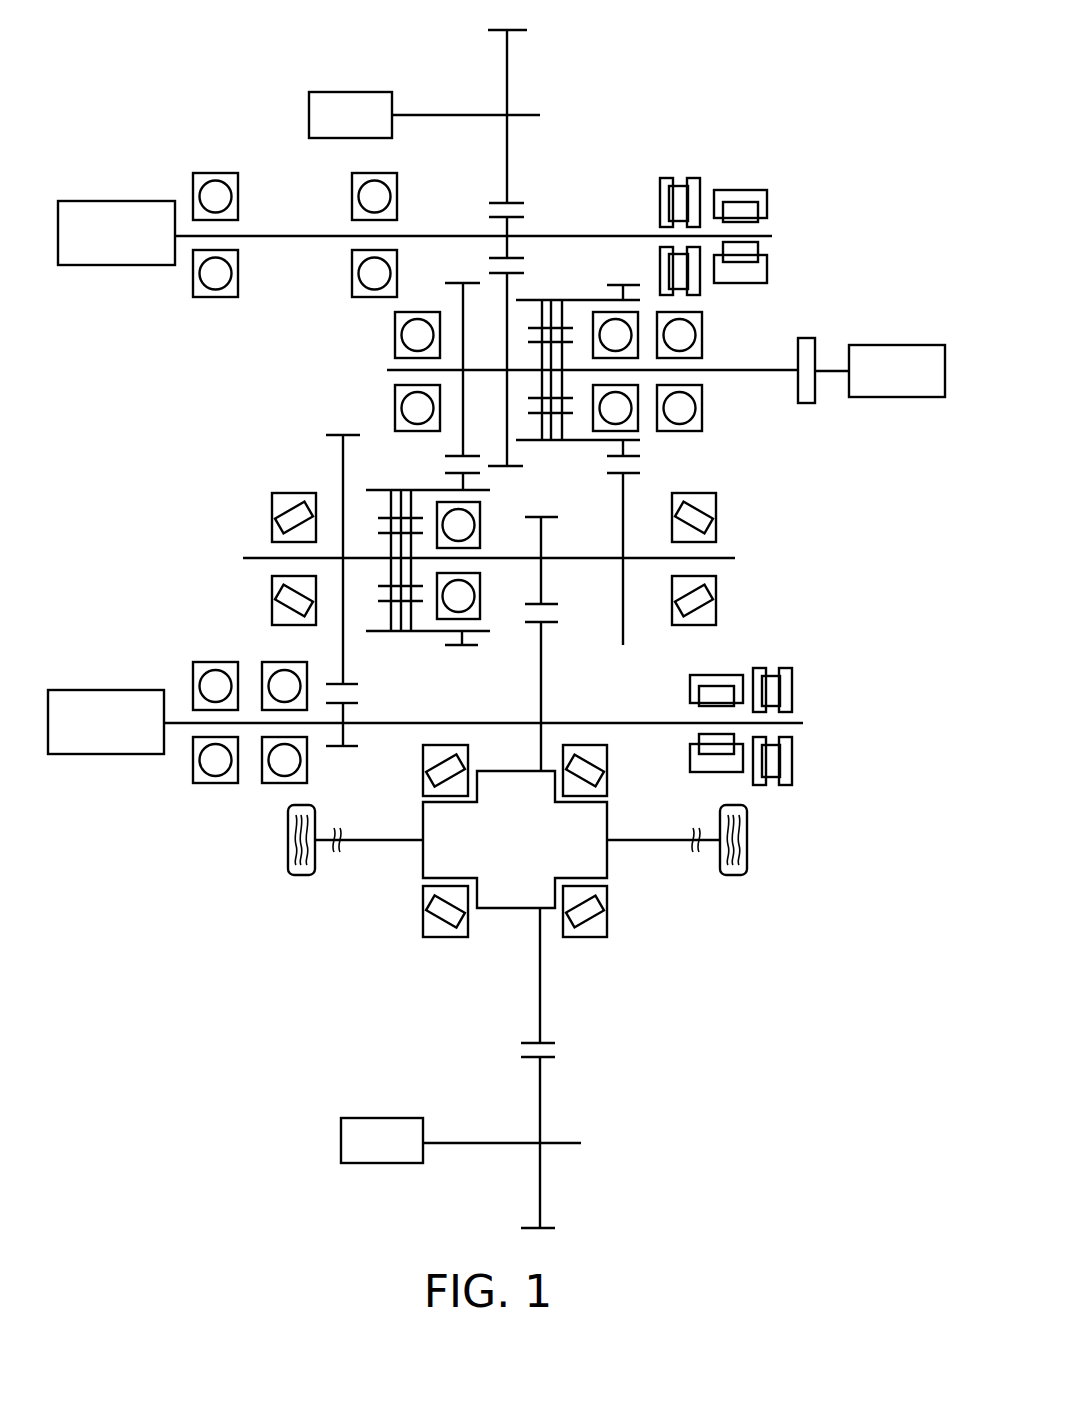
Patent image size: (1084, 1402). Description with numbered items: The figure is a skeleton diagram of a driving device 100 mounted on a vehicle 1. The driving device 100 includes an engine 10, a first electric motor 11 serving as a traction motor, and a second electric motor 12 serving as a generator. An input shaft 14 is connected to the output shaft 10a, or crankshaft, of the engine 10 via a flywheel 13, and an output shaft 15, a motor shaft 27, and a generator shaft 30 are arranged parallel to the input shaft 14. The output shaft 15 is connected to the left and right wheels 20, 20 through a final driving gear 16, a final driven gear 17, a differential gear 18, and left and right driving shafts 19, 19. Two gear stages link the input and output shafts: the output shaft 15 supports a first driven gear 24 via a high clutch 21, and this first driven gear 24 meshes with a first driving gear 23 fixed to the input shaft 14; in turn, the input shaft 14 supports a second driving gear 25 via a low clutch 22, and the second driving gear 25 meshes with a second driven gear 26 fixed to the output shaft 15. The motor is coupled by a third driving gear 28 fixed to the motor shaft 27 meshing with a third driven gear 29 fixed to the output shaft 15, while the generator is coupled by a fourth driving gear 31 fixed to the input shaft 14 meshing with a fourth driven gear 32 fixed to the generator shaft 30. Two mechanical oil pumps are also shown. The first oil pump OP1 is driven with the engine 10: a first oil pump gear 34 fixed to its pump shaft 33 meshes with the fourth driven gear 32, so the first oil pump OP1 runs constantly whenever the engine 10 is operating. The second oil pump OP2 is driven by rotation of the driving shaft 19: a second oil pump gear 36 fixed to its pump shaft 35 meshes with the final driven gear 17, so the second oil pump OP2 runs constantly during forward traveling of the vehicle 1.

The vehicle 1 is at (818, 155).
The driving device 100 is at (622, 118).
The engine 10 is at (886, 345).
The output shaft 10a is at (832, 371).
The first electric motor 11 is at (103, 690).
The second electric motor 12 is at (110, 201).
The flywheel 13 is at (805, 338).
The input shaft 14 is at (745, 371).
The output shaft 15 is at (590, 558).
The final driving gear 16 is at (542, 517).
The final driven gear 17 is at (542, 650).
The differential gear 18 is at (503, 908).
The driving shaft 19 is at (378, 840).
The wheel 20 is at (300, 875).
The high clutch 21 is at (413, 634).
The low clutch 22 is at (551, 297).
The first driving gear 23 is at (463, 347).
The first driven gear 24 is at (462, 645).
The second driving gear 25 is at (623, 285).
The second driven gear 26 is at (623, 473).
The motor shaft 27 is at (250, 723).
The third driving gear 28 is at (352, 746).
The third driven gear 29 is at (343, 465).
The generator shaft 30 is at (430, 236).
The fourth driving gear 31 is at (506, 400).
The fourth driven gear 32 is at (518, 215).
The pump shaft 33 is at (438, 115).
The first oil pump gear 34 is at (507, 62).
The pump shaft 35 is at (470, 1143).
The second oil pump gear 36 is at (540, 1180).
The first oil pump OP1 is at (345, 92).
The second oil pump OP2 is at (382, 1118).